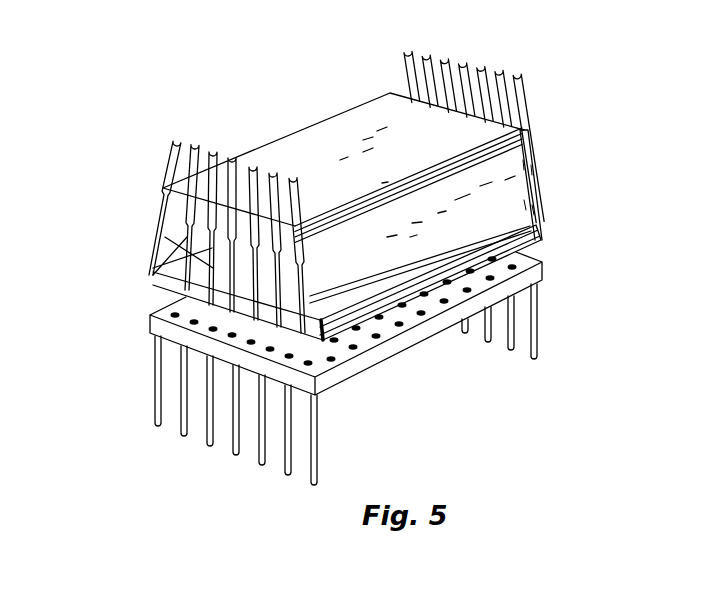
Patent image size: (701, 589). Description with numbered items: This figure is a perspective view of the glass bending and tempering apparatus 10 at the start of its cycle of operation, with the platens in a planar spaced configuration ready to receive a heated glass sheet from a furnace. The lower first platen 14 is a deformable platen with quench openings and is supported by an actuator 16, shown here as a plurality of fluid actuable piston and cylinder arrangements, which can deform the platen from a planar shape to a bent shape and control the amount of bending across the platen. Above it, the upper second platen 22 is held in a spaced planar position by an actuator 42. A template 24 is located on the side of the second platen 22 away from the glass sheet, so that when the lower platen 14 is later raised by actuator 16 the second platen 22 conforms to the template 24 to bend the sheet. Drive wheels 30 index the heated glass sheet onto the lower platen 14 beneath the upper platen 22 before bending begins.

The glass bending and tempering apparatus 10 is at (146, 60).
The first platen 14 is at (545, 265).
The actuator 16 is at (155, 378).
The second platen 22 is at (546, 226).
The template 24 is at (205, 238).
The drive wheels 30 is at (400, 327).
The actuator 42 is at (173, 160).